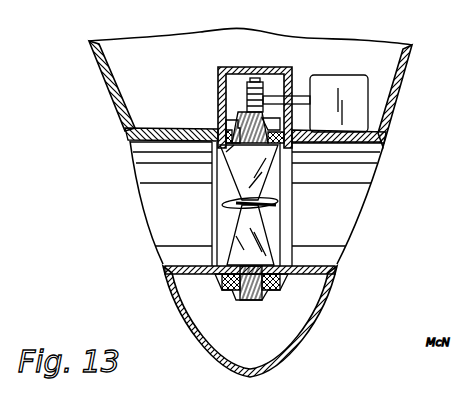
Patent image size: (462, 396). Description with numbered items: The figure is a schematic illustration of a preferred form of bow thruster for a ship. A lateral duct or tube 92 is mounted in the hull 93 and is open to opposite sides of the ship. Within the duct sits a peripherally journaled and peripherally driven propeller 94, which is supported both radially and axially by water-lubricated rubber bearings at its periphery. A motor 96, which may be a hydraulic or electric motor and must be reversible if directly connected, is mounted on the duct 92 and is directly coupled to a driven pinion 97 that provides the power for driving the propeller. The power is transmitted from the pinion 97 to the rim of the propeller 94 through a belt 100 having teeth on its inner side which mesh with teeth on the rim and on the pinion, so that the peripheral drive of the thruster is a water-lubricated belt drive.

The lateral duct 92 is at (376, 148).
The hull 93 is at (410, 82).
The propeller 94 is at (242, 170).
The motor 96 is at (343, 82).
The driven pinion 97 is at (262, 84).
The belt 100 is at (241, 71).